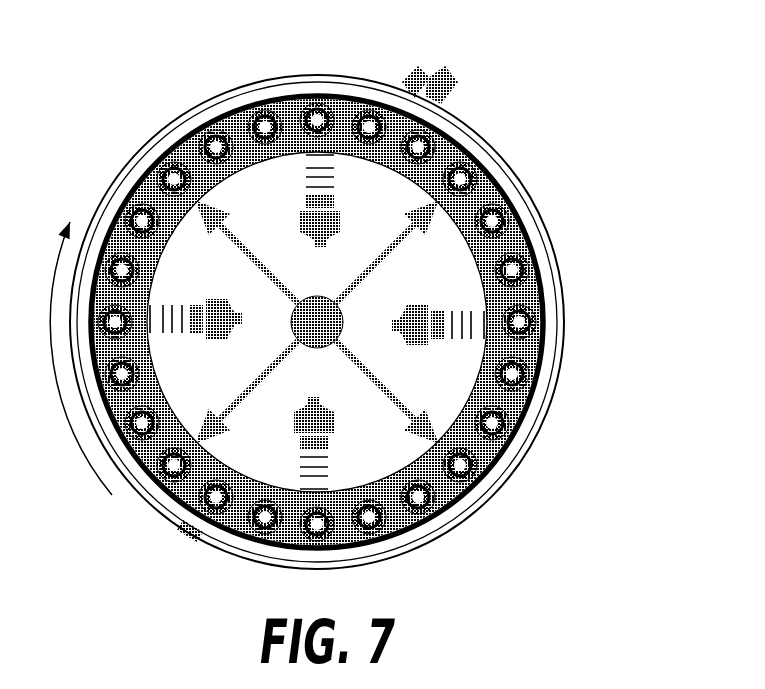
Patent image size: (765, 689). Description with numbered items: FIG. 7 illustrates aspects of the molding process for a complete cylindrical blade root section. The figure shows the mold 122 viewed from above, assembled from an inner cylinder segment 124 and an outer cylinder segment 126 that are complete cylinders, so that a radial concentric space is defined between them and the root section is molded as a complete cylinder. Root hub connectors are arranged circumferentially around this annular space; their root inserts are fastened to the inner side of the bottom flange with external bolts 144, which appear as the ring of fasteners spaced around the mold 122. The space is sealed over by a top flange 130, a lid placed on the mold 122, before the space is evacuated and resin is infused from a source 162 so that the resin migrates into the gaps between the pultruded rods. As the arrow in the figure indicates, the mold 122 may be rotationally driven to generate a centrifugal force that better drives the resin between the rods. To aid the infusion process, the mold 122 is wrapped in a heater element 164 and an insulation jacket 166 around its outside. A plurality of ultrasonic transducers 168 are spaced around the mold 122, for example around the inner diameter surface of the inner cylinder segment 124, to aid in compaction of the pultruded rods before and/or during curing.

The mold 122 is at (581, 51).
The inner cylinder segment 124 is at (258, 236).
The outer cylinder segment 126 is at (175, 142).
The top flange 130 is at (113, 235).
The external bolts 144 is at (510, 263).
The source 162 is at (312, 348).
The heater element 164 is at (511, 469).
The insulation jacket 166 is at (561, 345).
The ultrasonic transducers 168 is at (336, 237).